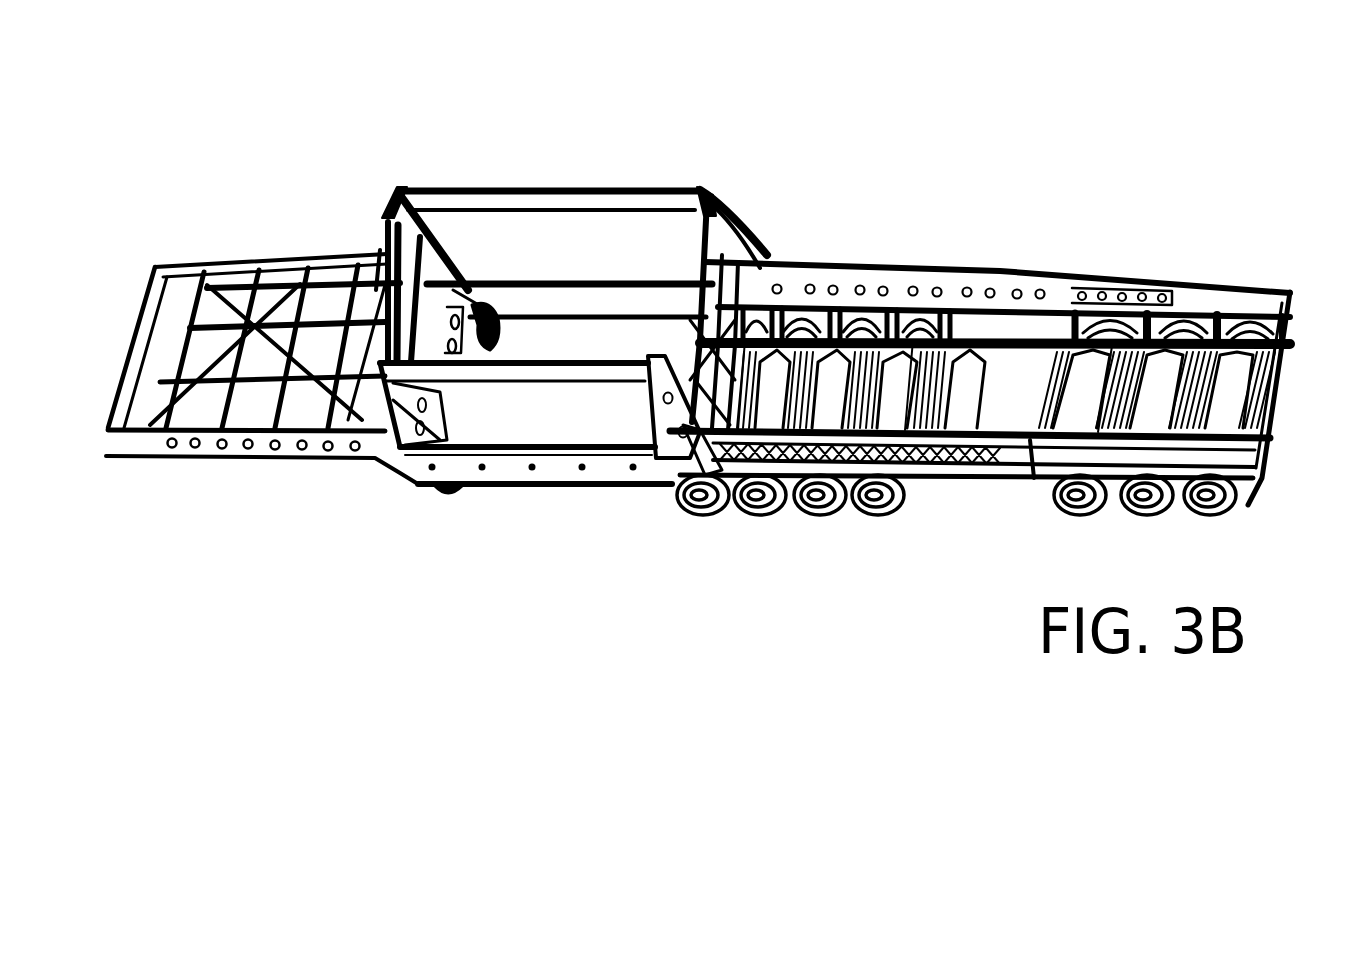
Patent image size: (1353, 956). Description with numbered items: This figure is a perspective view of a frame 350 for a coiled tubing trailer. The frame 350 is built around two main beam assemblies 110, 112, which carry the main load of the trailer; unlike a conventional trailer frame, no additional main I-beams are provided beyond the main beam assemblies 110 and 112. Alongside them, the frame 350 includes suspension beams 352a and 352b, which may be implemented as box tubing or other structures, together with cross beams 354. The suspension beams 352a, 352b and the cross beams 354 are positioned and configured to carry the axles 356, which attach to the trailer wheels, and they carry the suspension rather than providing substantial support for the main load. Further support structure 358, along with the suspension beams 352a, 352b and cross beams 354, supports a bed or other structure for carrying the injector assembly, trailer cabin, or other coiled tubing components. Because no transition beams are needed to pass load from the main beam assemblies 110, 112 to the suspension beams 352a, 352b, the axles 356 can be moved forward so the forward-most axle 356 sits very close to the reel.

The main beam assembly 110 is at (513, 518).
The main beam assembly 112 is at (612, 170).
The frame 350 is at (1077, 116).
The suspension beam 352a is at (1010, 340).
The suspension beam 352b is at (1024, 475).
The cross beams 354 is at (1066, 338).
The axles 356 is at (745, 340).
The support structure 358 is at (252, 285).